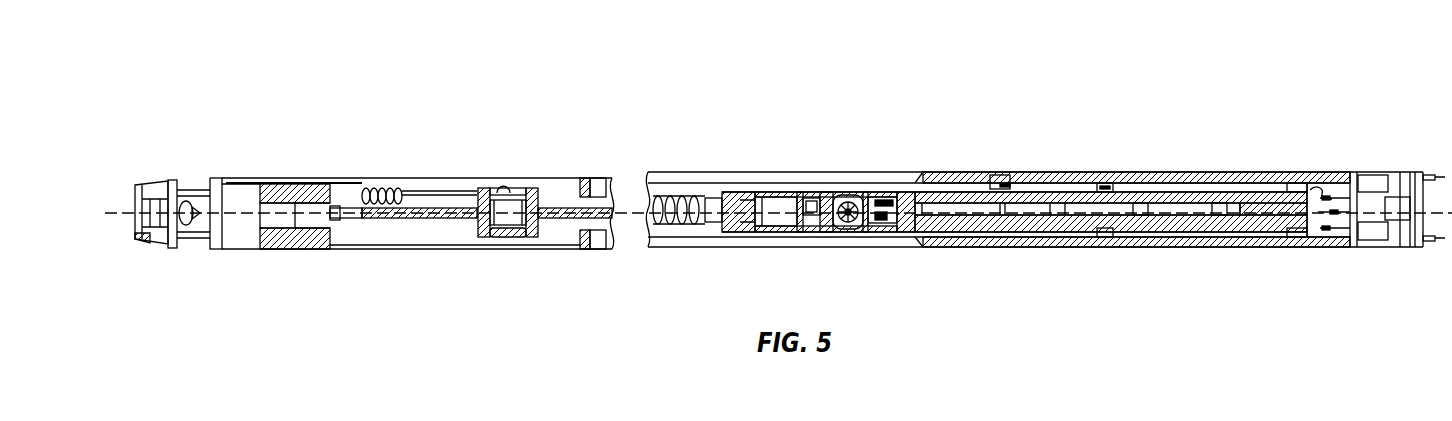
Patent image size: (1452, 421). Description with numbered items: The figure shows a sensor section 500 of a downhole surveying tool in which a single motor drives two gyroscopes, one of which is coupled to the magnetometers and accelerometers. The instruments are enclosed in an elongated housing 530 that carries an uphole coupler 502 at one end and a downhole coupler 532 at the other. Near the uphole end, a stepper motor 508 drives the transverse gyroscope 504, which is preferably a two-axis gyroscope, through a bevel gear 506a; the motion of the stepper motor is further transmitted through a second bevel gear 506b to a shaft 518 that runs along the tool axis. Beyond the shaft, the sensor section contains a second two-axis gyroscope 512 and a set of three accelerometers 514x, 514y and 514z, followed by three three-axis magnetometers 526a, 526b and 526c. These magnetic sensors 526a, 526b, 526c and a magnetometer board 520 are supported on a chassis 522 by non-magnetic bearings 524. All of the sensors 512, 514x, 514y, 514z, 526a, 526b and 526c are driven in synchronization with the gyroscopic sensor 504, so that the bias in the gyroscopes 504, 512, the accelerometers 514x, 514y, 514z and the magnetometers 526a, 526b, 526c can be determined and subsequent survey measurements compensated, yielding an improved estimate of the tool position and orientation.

The sensor section 500 is at (1110, 100).
The uphole coupler 502 is at (160, 248).
The transverse gyroscope 504 is at (517, 232).
The bevel gear 506a is at (478, 227).
The bevel gear 506b is at (540, 223).
The stepper motor 508 is at (318, 223).
The gyroscope 512 is at (778, 232).
The accelerometer 514x is at (887, 213).
The accelerometer 514y is at (850, 192).
The accelerometer 514z is at (814, 193).
The shaft 518 is at (585, 208).
The magnetometer board 520 is at (937, 205).
The chassis 522 is at (1098, 184).
The non-magnetic bearings 524 is at (1104, 188).
The three-axis magnetometer 526a is at (1055, 217).
The three-axis magnetometer 526b is at (1138, 217).
The three-axis magnetometer 526c is at (1220, 217).
The housing 530 is at (1270, 173).
The downhole coupler 532 is at (1395, 170).